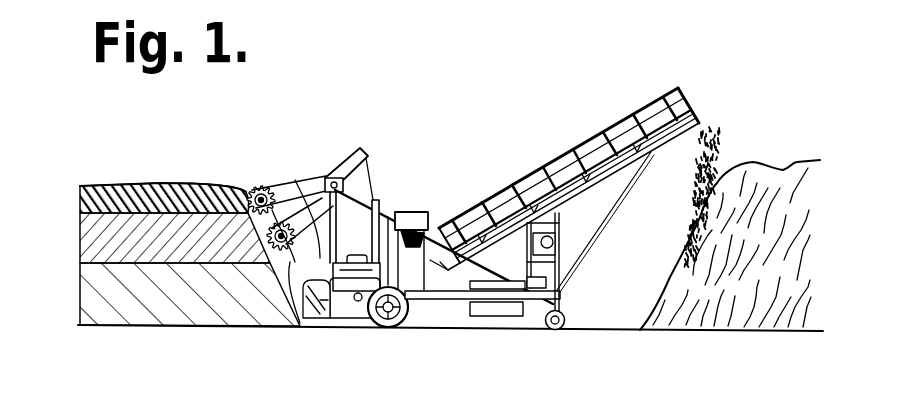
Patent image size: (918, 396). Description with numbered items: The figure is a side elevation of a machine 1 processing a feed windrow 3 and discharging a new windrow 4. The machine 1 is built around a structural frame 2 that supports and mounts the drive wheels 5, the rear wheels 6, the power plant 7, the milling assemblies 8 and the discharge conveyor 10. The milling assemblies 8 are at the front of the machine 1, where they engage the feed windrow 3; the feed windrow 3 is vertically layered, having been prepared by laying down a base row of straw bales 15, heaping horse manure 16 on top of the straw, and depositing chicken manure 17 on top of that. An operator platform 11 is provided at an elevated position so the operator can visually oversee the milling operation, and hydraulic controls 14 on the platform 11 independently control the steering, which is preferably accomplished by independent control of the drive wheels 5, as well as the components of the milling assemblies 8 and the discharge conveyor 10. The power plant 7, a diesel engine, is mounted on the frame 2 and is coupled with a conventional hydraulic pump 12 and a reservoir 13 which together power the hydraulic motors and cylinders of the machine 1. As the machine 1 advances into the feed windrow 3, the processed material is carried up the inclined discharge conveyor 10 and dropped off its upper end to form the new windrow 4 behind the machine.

The machine 1 is at (398, 125).
The structural frame 2 is at (452, 314).
The feed windrow 3 is at (166, 184).
The new windrow 4 is at (791, 163).
The drive wheels 5 is at (407, 317).
The rear wheels 6 is at (565, 325).
The power plant 7 is at (548, 260).
The milling assemblies 8 is at (295, 180).
The discharge conveyor 10 is at (605, 152).
The operator platform 11 is at (429, 210).
The hydraulic pump 12 is at (560, 280).
The reservoir 13 is at (501, 316).
The hydraulic controls 14 is at (392, 215).
The straw bales 15 is at (78, 301).
The horse manure 16 is at (79, 251).
The chicken manure 17 is at (79, 201).